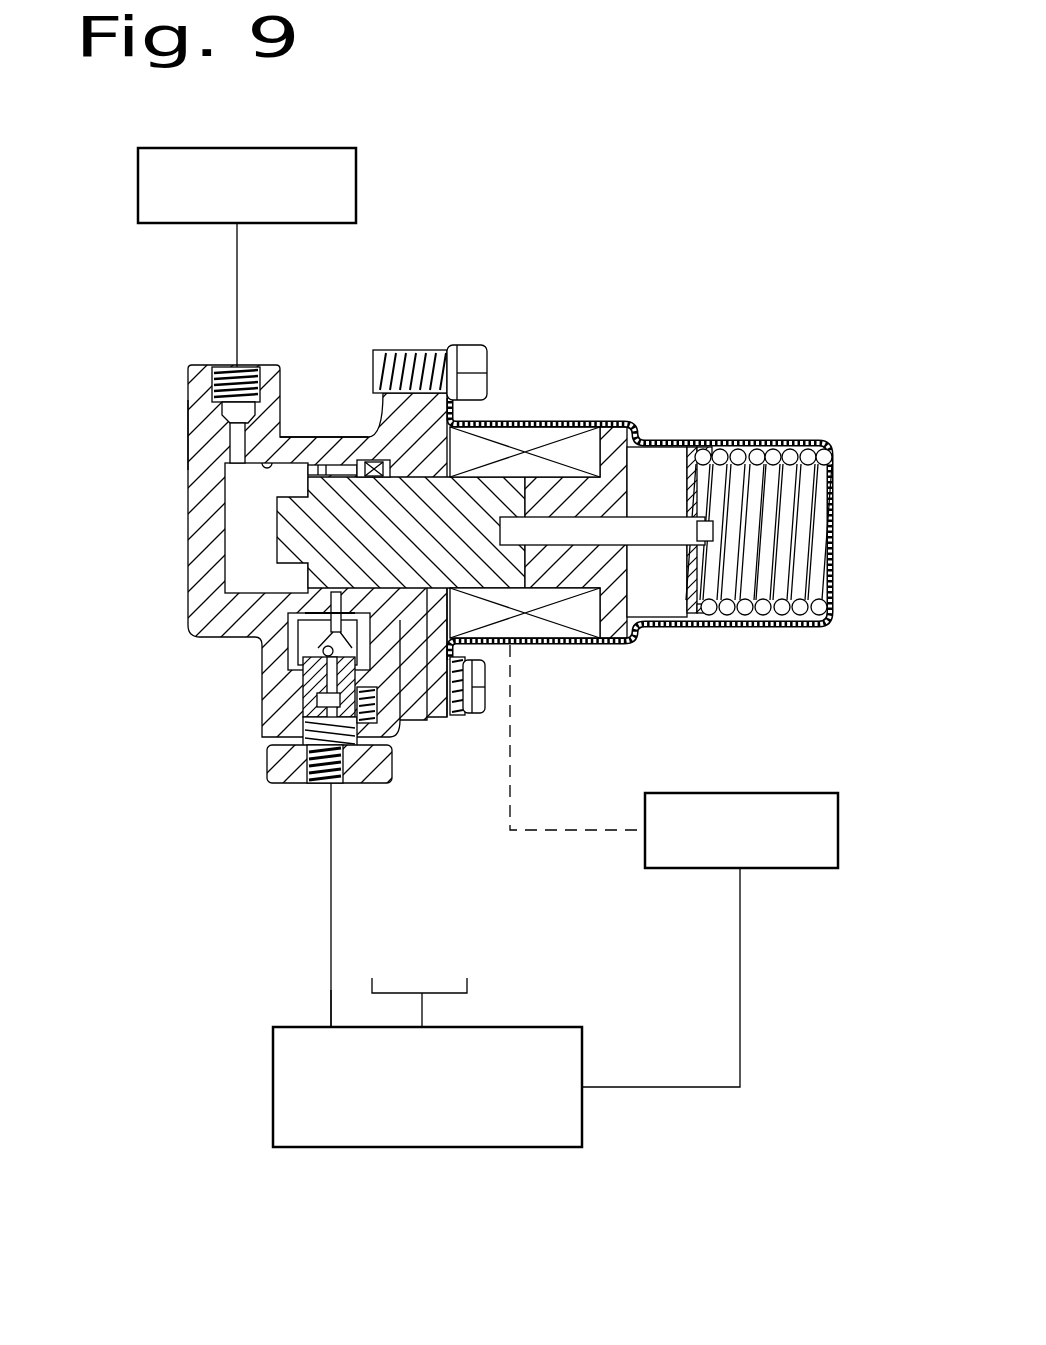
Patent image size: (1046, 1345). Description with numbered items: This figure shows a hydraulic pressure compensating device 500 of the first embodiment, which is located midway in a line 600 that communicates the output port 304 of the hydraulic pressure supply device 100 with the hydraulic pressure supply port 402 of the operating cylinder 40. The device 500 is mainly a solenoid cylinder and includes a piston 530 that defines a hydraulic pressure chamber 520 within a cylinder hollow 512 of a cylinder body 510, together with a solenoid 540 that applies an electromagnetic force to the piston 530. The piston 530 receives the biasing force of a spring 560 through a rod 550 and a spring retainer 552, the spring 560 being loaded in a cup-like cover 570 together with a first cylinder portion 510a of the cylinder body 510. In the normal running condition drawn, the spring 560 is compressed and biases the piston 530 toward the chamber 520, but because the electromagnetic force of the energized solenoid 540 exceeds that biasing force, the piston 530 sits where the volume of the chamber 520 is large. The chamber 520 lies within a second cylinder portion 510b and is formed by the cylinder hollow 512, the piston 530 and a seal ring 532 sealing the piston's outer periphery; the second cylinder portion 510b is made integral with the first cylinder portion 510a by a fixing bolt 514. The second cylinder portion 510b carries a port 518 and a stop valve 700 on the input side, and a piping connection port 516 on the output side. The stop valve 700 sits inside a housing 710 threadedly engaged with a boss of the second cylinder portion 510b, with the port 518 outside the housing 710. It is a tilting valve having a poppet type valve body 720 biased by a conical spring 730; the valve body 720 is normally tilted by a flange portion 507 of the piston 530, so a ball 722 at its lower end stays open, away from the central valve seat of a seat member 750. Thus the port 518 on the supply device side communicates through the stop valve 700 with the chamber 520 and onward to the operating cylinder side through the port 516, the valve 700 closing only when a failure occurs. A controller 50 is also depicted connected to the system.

The operating cylinder 40 is at (358, 192).
The hydraulic pressure supply port 402 is at (237, 228).
The controller 50 is at (840, 830).
The hydraulic pressure supply device 100 is at (440, 1148).
The output port 304 is at (330, 1025).
The hydraulic pressure compensating device 500 is at (630, 349).
The cylinder body 510 is at (180, 505).
The first cylinder portion 510a is at (433, 700).
The second cylinder portion 510b is at (193, 470).
The cylinder hollow 512 is at (282, 462).
The fixing bolt 514 is at (372, 392).
The piping connection port 516 is at (230, 366).
The port 518 is at (317, 780).
The hydraulic pressure chamber 520 is at (240, 545).
The flange portion 507 is at (268, 590).
The piston 530 is at (473, 500).
The seal ring 532 is at (370, 462).
The solenoid 540 is at (553, 627).
The rod 550 is at (653, 530).
The spring retainer 552 is at (700, 490).
The spring 560 is at (820, 617).
The cup-like cover 570 is at (693, 630).
The line 600 is at (317, 890).
The stop valve 700 is at (320, 640).
The housing 710 is at (277, 760).
The valve body 720 is at (305, 612).
The ball 722 is at (340, 680).
The conical spring 730 is at (395, 620).
The seat member 750 is at (330, 728).